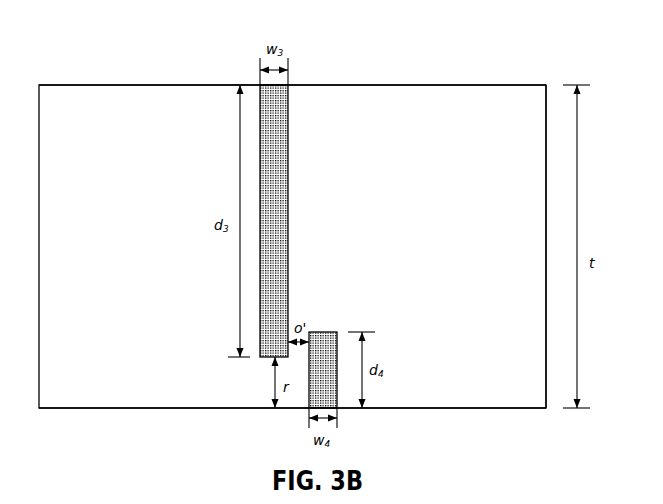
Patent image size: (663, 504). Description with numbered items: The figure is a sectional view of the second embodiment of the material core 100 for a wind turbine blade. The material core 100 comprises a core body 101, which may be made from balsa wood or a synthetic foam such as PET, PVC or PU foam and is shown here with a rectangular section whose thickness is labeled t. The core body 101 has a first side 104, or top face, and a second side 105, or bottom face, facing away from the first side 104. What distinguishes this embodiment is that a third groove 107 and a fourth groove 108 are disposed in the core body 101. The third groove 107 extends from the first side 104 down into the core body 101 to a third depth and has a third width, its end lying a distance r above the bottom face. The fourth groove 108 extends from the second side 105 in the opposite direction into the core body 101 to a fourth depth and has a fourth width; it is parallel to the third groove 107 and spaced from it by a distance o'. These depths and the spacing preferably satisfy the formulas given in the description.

The material core 100 is at (292, 214).
The core body 101 is at (571, 72).
The first side 104 is at (328, 80).
The second side 105 is at (421, 411).
The third groove 107 is at (291, 204).
The fourth groove 108 is at (399, 340).